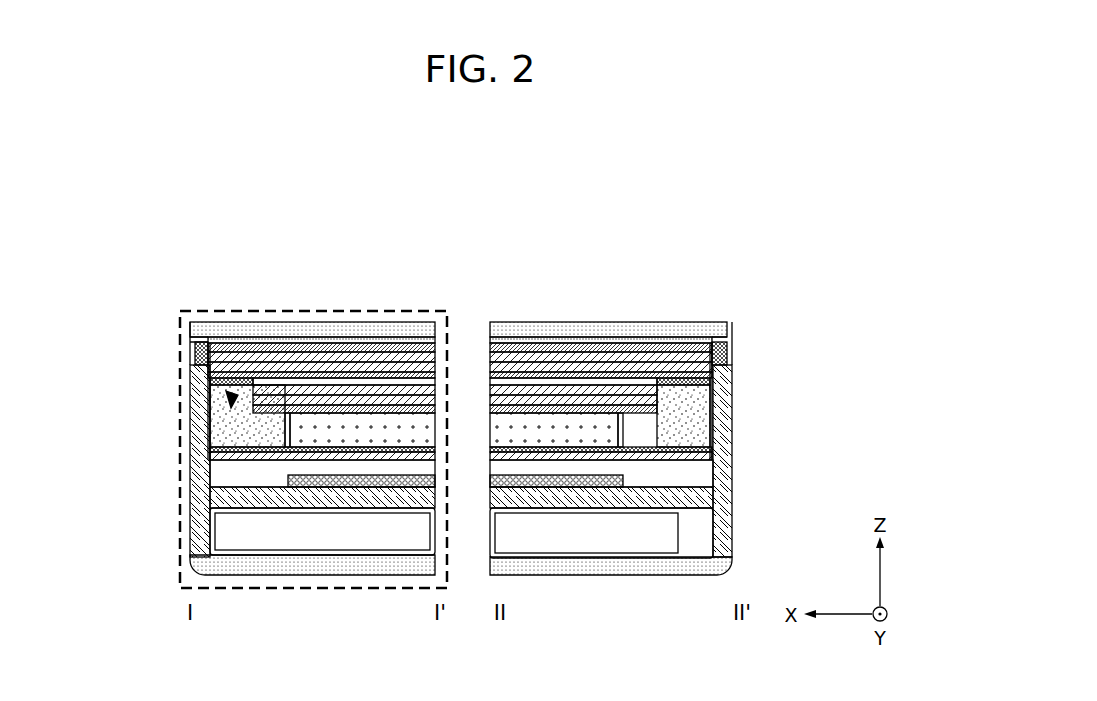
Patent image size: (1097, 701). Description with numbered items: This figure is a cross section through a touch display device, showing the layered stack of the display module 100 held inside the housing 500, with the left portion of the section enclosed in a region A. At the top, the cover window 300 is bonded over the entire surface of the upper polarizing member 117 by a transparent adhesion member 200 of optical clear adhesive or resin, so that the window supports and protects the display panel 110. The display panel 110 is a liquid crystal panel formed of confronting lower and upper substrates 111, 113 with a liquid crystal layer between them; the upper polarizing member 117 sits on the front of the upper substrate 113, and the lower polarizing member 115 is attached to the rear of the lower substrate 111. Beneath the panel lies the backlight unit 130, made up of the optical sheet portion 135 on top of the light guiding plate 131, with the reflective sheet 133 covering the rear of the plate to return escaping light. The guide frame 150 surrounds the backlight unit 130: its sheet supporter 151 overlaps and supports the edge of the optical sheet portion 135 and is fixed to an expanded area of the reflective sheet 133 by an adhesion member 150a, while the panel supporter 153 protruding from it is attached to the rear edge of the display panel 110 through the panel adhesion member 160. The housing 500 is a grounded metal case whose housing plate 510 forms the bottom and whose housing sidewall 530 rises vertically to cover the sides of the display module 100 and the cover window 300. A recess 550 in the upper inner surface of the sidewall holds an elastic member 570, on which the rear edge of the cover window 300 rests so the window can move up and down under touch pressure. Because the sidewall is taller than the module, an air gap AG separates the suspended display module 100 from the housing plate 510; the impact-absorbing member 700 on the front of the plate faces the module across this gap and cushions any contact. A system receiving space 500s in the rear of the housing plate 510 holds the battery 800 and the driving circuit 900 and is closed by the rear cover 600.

The display module 100 is at (590, 200).
The display panel 110 is at (460, 293).
The lower substrate 111 is at (378, 367).
The upper substrate 113 is at (340, 357).
The lower polarizing member 115 is at (300, 254).
The upper polarizing member 117 is at (300, 348).
The backlight unit 130 is at (455, 328).
The light guiding plate 131 is at (585, 425).
The reflective sheet 133 is at (612, 445).
The optical sheet portion 135 is at (565, 390).
The guide frame 150 is at (213, 378).
The adhesion member 150a is at (213, 448).
The sheet supporter 151 is at (272, 418).
The panel supporter 153 is at (222, 389).
The panel adhesion member 160 is at (250, 385).
The transparent adhesion member 200 is at (672, 340).
The cover window 300 is at (697, 322).
The housing 500 is at (542, 440).
The system receiving space 500s is at (756, 536).
The housing plate 510 is at (735, 491).
The housing sidewall 530 is at (735, 446).
The recess 550 is at (735, 373).
The elastic member 570 is at (735, 345).
The rear cover 600 is at (318, 568).
The impact-absorbing member 700 is at (578, 490).
The battery 800 is at (380, 545).
The driving circuit 900 is at (652, 545).
The region A is at (180, 311).
The air gap AG is at (303, 463).